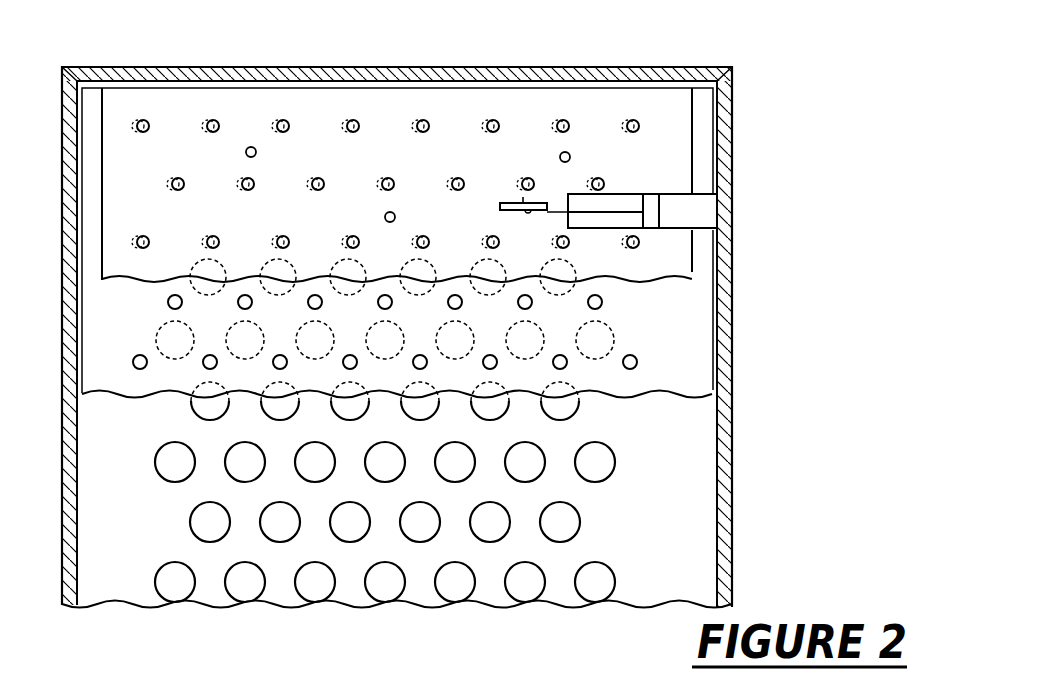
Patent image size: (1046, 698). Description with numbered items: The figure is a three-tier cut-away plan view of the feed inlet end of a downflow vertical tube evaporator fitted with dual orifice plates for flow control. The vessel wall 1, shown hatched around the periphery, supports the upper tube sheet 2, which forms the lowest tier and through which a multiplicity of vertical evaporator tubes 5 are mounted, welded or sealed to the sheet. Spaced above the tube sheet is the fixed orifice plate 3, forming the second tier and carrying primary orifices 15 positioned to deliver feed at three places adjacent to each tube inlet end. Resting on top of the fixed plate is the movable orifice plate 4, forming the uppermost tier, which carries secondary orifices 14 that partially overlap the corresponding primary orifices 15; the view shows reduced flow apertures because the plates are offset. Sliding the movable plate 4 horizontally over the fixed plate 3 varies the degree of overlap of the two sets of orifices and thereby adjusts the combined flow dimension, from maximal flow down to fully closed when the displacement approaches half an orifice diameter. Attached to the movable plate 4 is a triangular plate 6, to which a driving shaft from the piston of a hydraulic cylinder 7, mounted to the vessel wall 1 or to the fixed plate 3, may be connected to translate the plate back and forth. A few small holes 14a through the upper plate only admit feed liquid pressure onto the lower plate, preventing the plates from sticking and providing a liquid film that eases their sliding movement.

The vessel wall 1 is at (58, 98).
The upper tube sheet 2 is at (699, 544).
The fixed orifice plate 3 is at (693, 372).
The movable orifice plate 4 is at (660, 174).
The evaporator tubes 5 is at (615, 462).
The triangular plate 6 is at (510, 202).
The hydraulic cylinder 7 is at (677, 232).
The secondary orifices 14 is at (561, 119).
The small holes 14a is at (385, 214).
The primary orifices 15 is at (602, 302).